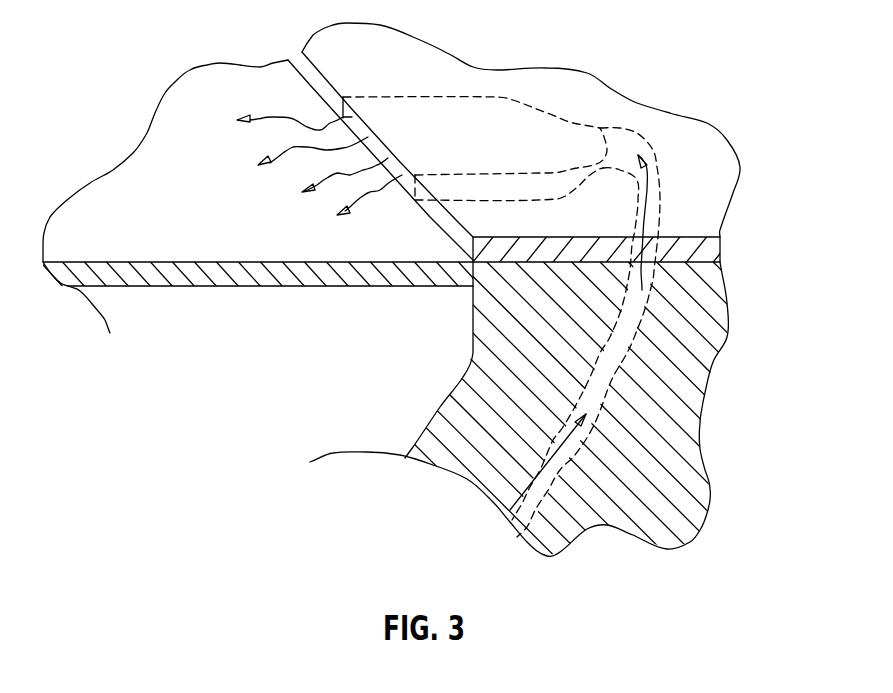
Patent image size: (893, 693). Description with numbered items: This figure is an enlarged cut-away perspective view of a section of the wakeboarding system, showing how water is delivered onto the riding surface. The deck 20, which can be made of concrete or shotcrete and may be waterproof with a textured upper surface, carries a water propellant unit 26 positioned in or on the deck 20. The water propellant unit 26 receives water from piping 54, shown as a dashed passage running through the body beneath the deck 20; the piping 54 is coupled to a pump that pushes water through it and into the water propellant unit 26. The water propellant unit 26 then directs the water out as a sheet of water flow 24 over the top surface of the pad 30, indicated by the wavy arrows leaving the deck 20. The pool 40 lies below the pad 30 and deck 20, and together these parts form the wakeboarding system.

The deck 20 is at (704, 197).
The flow of water 24 is at (263, 117).
The water propellant unit 26 is at (460, 117).
The pad 30 is at (187, 219).
The pool 40 is at (297, 375).
The piping 54 is at (607, 372).